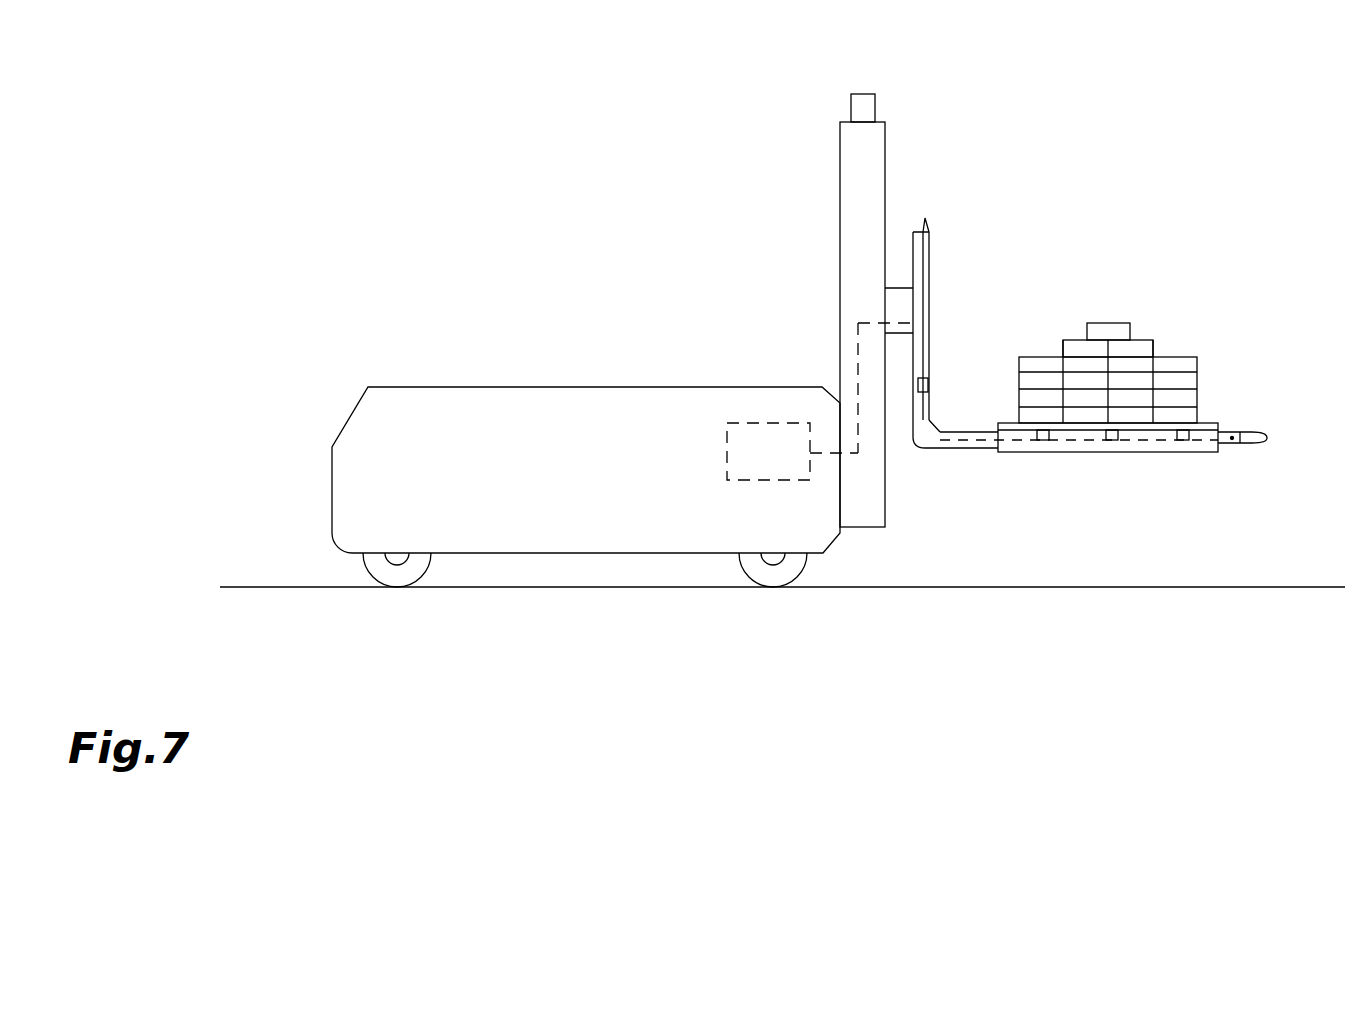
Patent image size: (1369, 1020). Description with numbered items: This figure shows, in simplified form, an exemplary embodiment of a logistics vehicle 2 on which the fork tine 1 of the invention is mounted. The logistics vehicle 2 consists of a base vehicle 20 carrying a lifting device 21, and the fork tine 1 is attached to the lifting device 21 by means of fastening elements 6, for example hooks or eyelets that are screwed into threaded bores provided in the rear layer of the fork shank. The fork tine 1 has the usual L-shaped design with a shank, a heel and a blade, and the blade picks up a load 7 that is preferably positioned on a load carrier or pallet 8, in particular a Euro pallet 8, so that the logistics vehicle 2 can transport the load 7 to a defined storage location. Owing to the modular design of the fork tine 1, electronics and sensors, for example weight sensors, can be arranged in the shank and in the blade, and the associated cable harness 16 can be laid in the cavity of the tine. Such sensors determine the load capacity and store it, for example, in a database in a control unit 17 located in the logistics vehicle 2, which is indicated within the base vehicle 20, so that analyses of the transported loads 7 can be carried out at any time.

The fork tine 1 is at (1060, 244).
The logistics vehicle 2 is at (313, 265).
The fastening elements 6 is at (901, 311).
The load 7 is at (1160, 384).
The pallet 8 is at (1093, 437).
The cable harness 16 is at (1012, 440).
The control unit 17 is at (753, 453).
The base vehicle 20 is at (512, 418).
The lifting device 21 is at (858, 211).